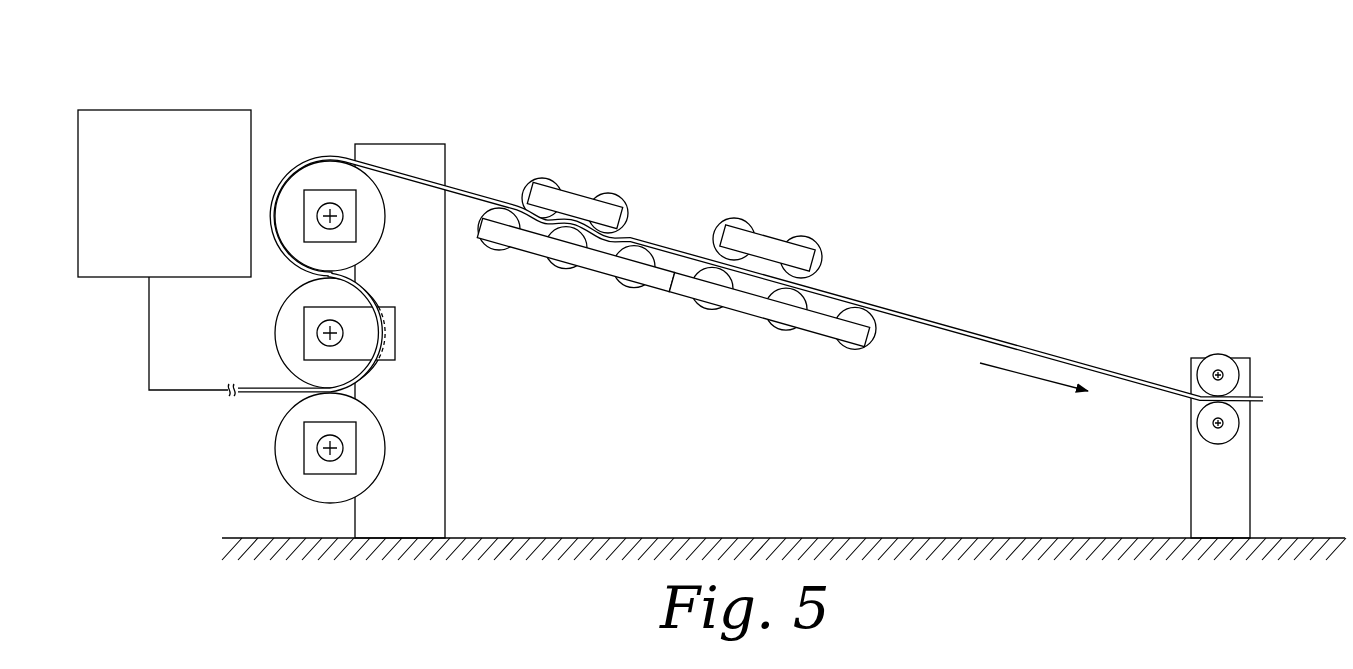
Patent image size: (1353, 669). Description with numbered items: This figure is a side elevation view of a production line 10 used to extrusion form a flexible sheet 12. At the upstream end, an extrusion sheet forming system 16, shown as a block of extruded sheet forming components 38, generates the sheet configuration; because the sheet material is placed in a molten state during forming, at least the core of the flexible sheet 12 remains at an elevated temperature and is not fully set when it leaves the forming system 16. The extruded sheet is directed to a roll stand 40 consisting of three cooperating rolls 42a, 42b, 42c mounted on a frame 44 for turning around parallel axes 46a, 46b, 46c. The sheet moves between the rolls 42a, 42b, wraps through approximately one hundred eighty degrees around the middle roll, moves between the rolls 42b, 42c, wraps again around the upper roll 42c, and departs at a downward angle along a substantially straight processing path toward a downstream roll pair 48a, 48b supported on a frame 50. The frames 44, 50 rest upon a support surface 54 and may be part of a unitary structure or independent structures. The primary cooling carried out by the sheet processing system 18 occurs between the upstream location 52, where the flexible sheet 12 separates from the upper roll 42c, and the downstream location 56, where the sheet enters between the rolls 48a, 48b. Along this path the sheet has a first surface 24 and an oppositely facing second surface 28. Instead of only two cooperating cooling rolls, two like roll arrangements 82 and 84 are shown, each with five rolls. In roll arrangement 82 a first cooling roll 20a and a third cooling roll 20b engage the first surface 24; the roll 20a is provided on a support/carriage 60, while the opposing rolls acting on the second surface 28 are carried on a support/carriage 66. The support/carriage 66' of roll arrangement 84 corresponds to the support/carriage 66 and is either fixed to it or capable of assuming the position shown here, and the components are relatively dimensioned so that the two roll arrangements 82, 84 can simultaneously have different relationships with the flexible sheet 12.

The production line 10 is at (876, 209).
The flexible sheet 12 is at (274, 393).
The extrusion sheet forming system 16 is at (326, 146).
The sheet processing system 18 is at (707, 182).
The first cooling roll 20a is at (550, 178).
The third cooling roll 20b is at (617, 198).
The first surface 24 is at (942, 321).
The second surface 28 is at (962, 334).
The extruded sheet forming components 38 is at (200, 266).
The roll stand 40 is at (412, 419).
The roll 42a is at (292, 470).
The roll 42b is at (276, 330).
The upper roll 42c is at (306, 178).
The frame 44 is at (452, 388).
The axis 46a is at (331, 447).
The axis 46b is at (331, 333).
The axis 46c is at (331, 215).
The downstream roll 48a is at (1205, 438).
The downstream roll 48b is at (1228, 356).
The frame 50 is at (1252, 497).
The upstream location 52 is at (482, 181).
The support surface 54 is at (815, 538).
The downstream location 56 is at (1172, 355).
The support/carriage 60 is at (578, 207).
The support/carriage 66 is at (575, 278).
The support/carriage 66' is at (769, 328).
The roll arrangement 82 is at (604, 139).
The roll arrangement 84 is at (783, 218).